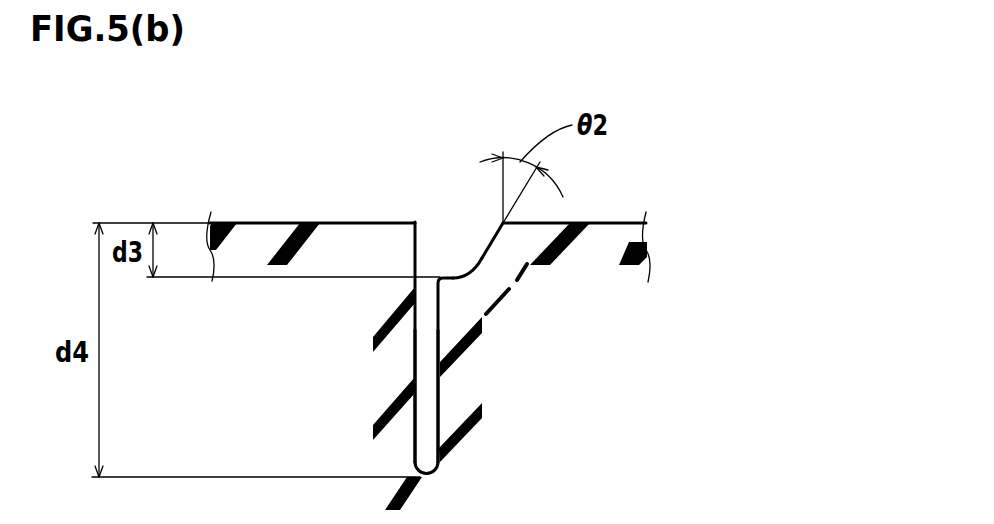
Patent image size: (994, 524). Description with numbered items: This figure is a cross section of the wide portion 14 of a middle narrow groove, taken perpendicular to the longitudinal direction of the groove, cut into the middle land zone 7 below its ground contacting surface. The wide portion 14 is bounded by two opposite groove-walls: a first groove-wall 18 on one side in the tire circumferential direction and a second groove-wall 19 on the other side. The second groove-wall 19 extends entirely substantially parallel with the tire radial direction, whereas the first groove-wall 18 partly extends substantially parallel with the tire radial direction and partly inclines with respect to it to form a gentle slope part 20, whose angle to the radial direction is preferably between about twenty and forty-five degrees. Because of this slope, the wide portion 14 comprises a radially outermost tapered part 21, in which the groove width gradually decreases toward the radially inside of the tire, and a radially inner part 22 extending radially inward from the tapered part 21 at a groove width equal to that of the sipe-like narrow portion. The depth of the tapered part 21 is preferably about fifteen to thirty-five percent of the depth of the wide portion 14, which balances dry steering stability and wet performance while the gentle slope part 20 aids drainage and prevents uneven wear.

The second groove-wall 19 is at (417, 256).
The gentle slope part 20 is at (482, 264).
The tapered part 21 is at (460, 253).
The radially inner part 22 is at (418, 401).
The first groove-wall 18 is at (441, 443).
The middle land zone 7 is at (612, 222).
The wide portion 14 is at (737, 295).